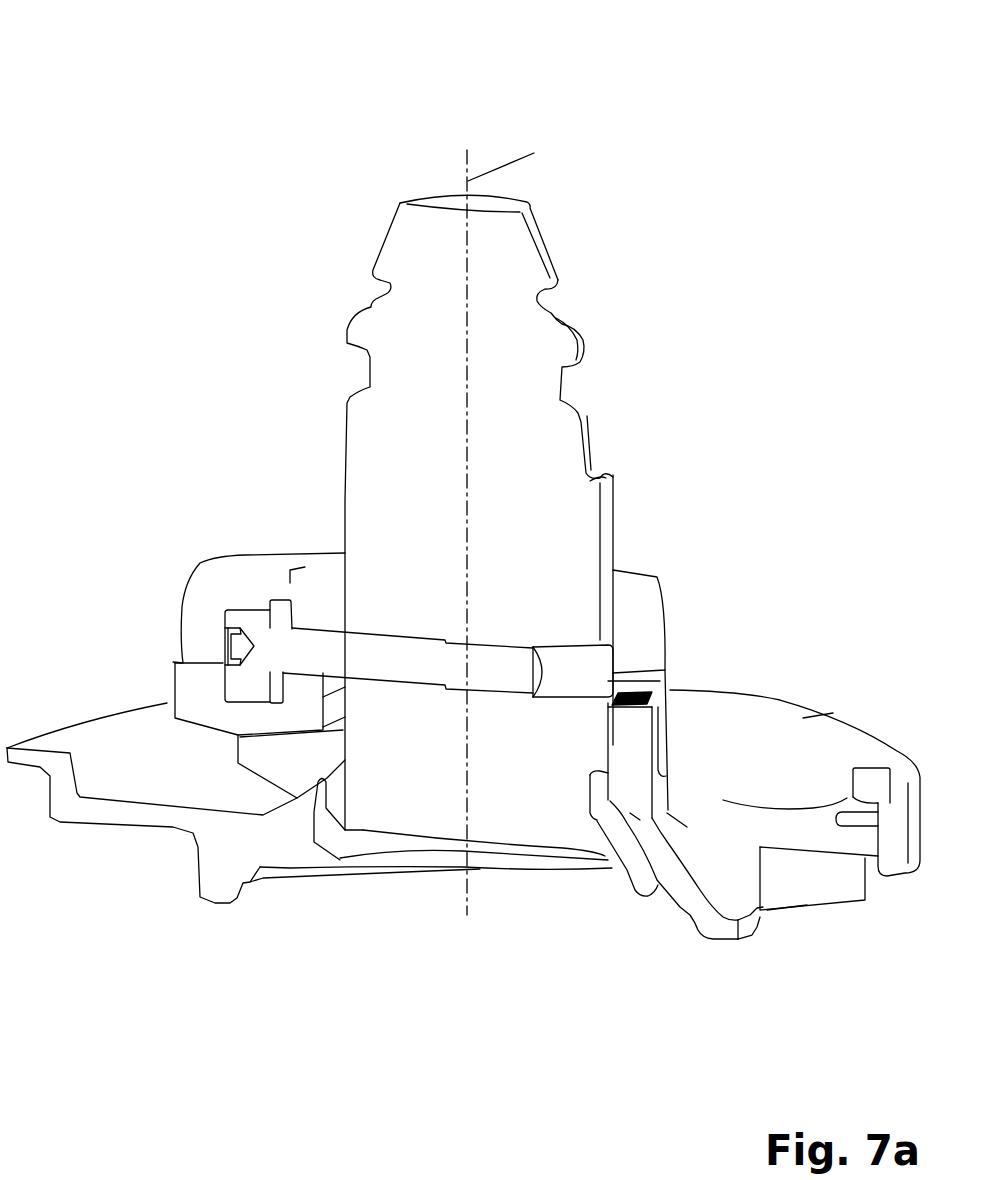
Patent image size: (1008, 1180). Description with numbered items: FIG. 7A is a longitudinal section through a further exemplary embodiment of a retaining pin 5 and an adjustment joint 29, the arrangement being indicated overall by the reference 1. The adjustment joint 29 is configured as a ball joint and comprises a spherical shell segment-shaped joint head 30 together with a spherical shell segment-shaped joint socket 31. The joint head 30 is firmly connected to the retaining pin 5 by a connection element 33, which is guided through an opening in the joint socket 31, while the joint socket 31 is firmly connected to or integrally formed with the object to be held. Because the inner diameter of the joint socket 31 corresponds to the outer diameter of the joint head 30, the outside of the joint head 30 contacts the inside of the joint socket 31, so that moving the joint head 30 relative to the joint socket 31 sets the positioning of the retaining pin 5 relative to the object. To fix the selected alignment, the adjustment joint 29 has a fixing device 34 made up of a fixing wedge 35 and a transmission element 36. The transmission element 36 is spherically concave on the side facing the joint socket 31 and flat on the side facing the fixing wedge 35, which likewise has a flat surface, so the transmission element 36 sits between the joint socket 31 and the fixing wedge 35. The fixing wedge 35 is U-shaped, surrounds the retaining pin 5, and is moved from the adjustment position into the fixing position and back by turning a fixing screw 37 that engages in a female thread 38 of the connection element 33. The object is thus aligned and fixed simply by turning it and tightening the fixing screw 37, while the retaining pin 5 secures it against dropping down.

The device 1 is at (200, 135).
The retaining pin 5 is at (523, 348).
The adjustment joint 29 is at (705, 477).
The joint head 30 is at (608, 855).
The joint socket 31 is at (678, 887).
The connection element 33 is at (552, 617).
The fixing device 34 is at (660, 680).
The fixing wedge 35 is at (647, 637).
The transmission element 36 is at (257, 763).
The fixing screw 37 is at (323, 655).
The female thread 38 is at (570, 673).